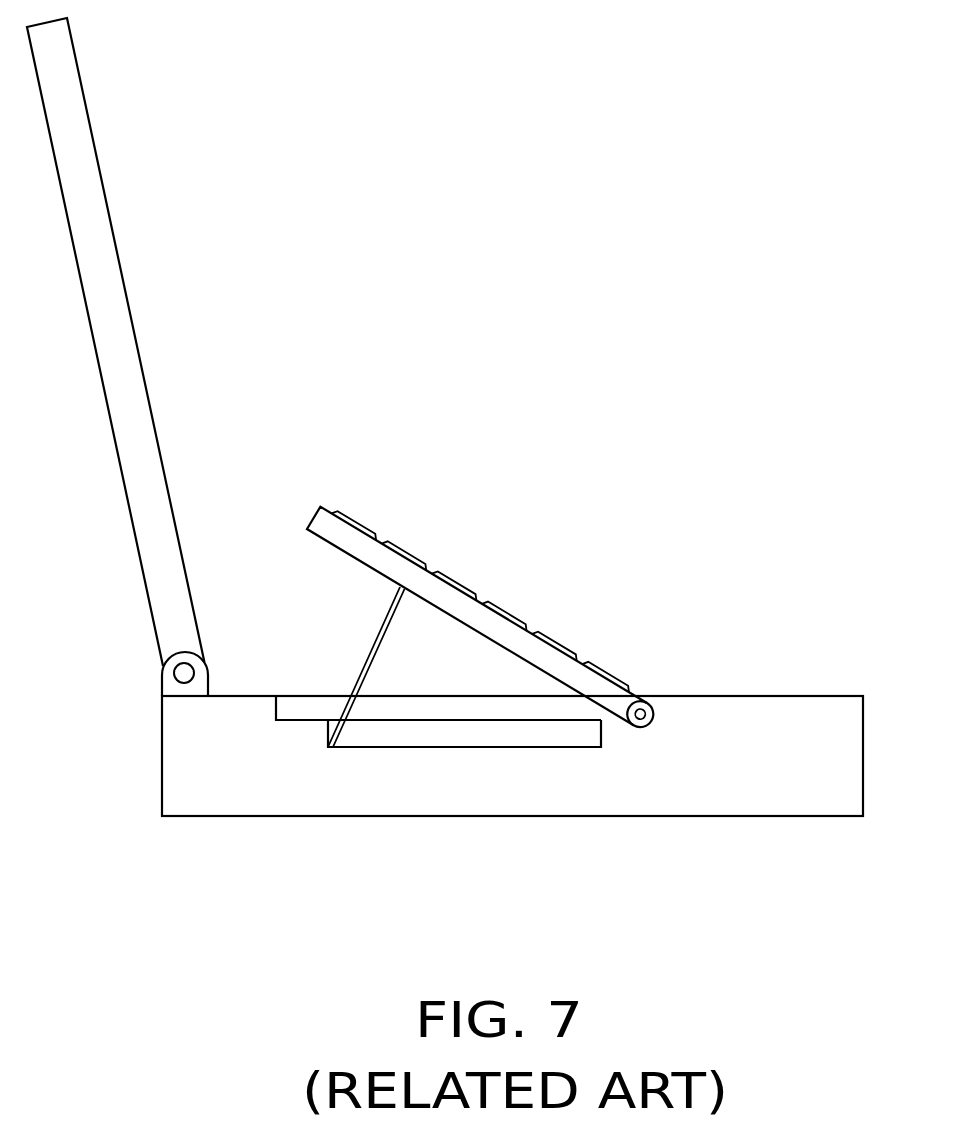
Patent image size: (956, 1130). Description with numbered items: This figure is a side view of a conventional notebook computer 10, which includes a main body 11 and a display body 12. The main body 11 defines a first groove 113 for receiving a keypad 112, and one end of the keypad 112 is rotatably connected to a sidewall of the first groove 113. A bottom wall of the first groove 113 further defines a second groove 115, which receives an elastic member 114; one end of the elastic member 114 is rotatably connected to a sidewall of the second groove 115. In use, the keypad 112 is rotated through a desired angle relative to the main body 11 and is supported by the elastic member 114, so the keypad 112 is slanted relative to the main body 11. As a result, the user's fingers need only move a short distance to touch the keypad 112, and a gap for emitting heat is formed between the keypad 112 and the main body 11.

The notebook computer 10 is at (410, 302).
The main body 11 is at (731, 790).
The display body 12 is at (75, 140).
The keypad 112 is at (418, 578).
The first groove 113 is at (295, 710).
The elastic member 114 is at (380, 632).
The second groove 115 is at (519, 732).